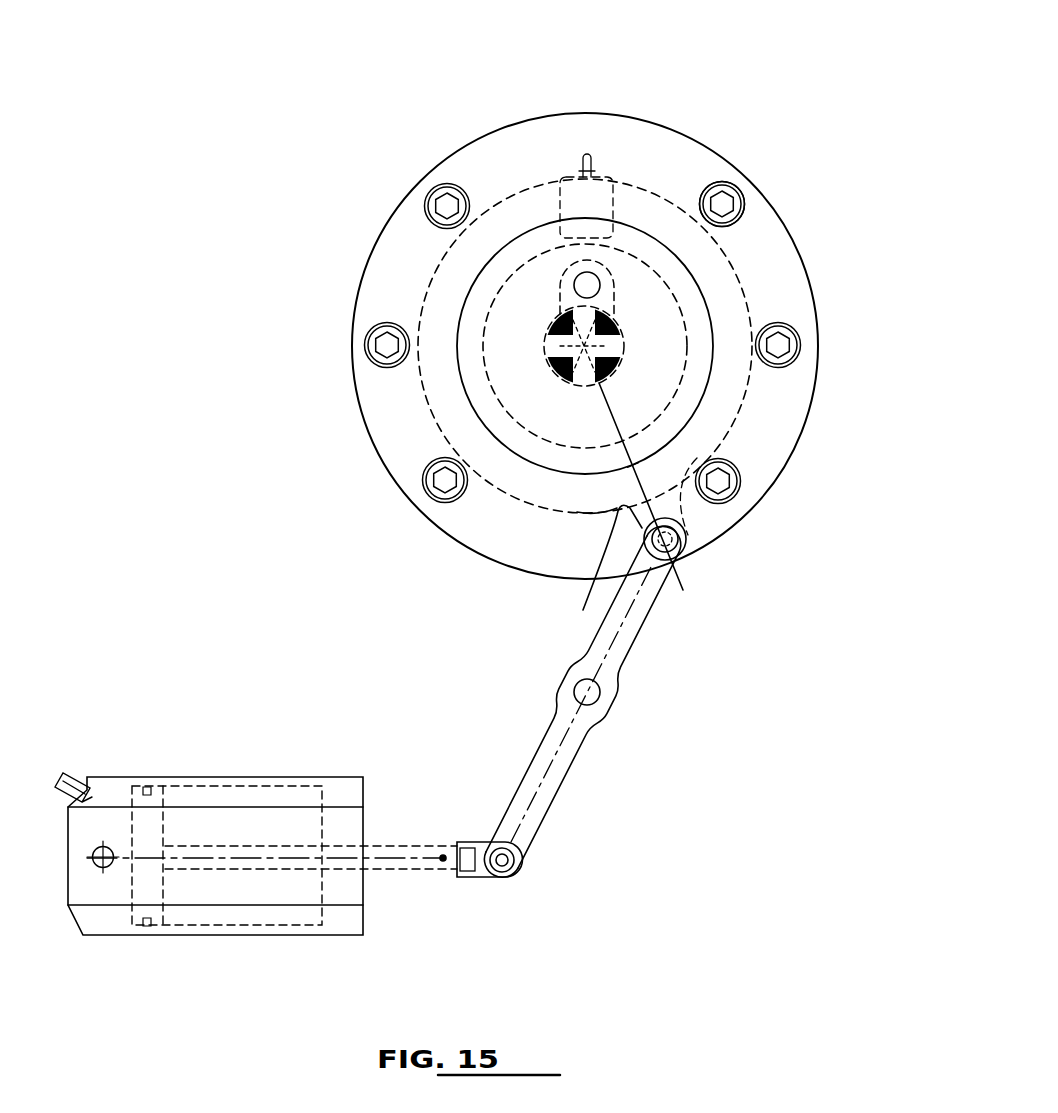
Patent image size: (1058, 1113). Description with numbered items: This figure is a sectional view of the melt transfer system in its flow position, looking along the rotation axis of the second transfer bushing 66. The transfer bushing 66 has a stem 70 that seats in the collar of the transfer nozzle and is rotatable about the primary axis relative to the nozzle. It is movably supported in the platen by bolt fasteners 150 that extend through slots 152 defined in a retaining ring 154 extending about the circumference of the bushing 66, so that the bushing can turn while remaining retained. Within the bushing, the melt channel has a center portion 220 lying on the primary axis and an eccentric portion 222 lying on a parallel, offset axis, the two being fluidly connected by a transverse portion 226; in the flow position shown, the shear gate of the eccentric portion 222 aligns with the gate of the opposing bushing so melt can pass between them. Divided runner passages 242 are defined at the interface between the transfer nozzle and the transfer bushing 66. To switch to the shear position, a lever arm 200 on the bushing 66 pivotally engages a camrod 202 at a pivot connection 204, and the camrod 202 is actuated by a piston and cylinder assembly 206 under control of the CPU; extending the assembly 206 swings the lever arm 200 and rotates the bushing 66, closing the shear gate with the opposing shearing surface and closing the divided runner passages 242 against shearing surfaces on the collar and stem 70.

The second transfer bushing 66 is at (538, 200).
The stem 70 is at (573, 387).
The bolt fastener 150 is at (730, 207).
The slot 152 is at (742, 218).
The retaining ring 154 is at (400, 272).
The lever arm 200 is at (617, 512).
The camrod 202 is at (577, 735).
The pivot pin 204 is at (688, 548).
The piston and cylinder assembly 206 is at (271, 777).
The center portion 220 is at (612, 345).
The eccentric portion 222 is at (588, 284).
The transverse portion 226 is at (558, 303).
The divided runner passage 242 is at (552, 352).